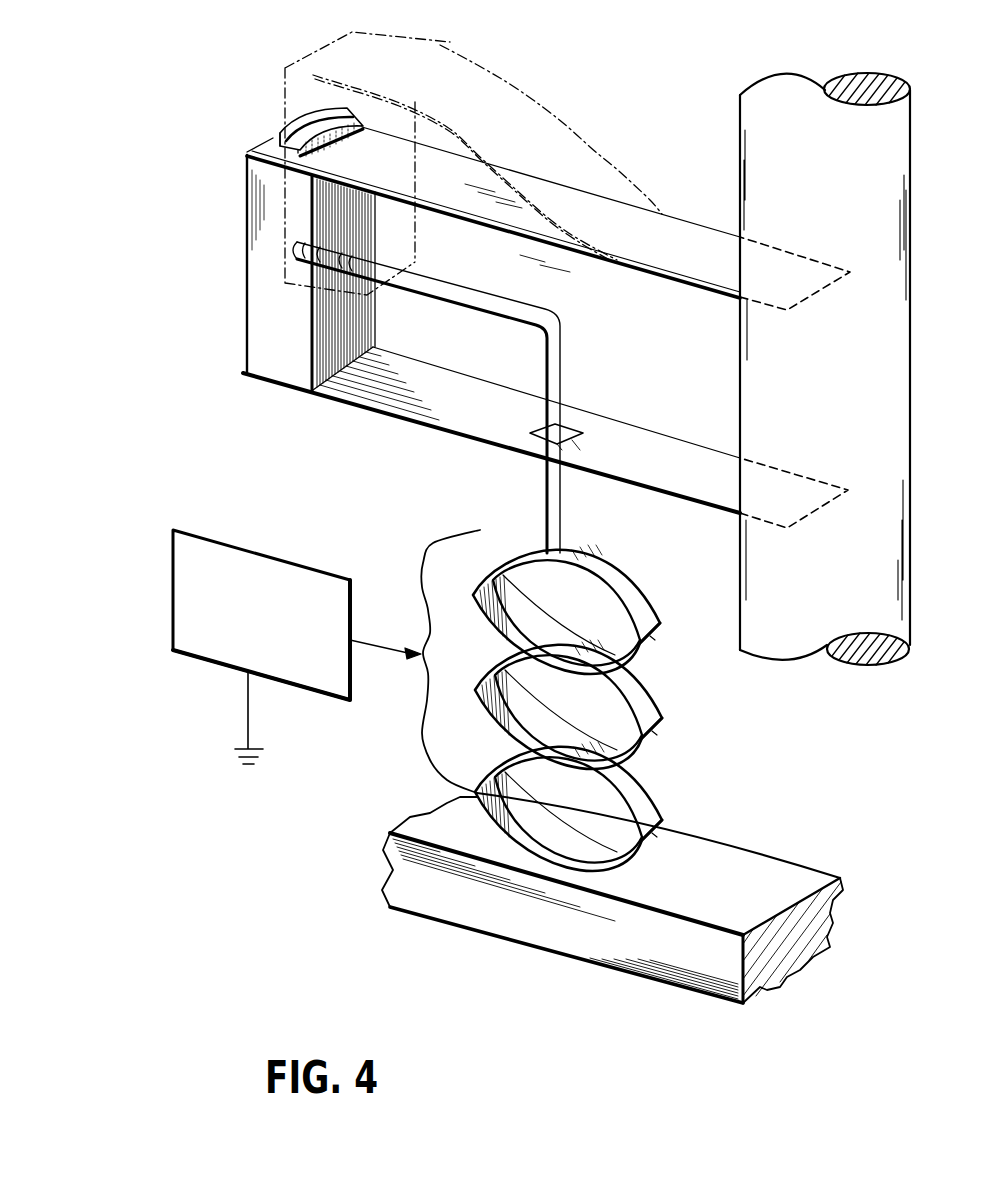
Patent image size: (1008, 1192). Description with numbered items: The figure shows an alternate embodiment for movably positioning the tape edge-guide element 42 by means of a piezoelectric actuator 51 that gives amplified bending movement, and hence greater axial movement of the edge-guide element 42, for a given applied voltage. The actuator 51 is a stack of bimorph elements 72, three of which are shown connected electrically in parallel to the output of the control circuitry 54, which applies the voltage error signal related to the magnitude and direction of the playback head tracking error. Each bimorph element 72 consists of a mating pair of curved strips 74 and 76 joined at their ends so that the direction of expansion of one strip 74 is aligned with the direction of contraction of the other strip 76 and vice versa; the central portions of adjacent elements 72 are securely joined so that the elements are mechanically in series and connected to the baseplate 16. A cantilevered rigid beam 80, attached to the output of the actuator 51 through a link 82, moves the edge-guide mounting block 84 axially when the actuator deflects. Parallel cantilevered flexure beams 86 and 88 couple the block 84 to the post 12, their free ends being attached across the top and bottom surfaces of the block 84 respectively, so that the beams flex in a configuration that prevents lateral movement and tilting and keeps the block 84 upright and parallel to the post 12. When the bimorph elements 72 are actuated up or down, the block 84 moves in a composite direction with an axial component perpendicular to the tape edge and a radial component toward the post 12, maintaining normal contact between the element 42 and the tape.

The post 12 is at (765, 105).
The baseplate 16 is at (472, 910).
The edge-guide element 42 is at (281, 138).
The piezoelectric actuator 51 is at (630, 708).
The control circuitry 54 is at (303, 563).
The bimorph element 72 is at (498, 531).
The curved strip 74 is at (610, 578).
The curved strip 76 is at (645, 641).
The cantilevered rigid beam 80 is at (450, 285).
The link 82 is at (560, 340).
The edge-guide mounting block 84 is at (298, 98).
The cantilevered flexure beam 86 is at (430, 78).
The cantilevered flexure beam 88 is at (718, 467).